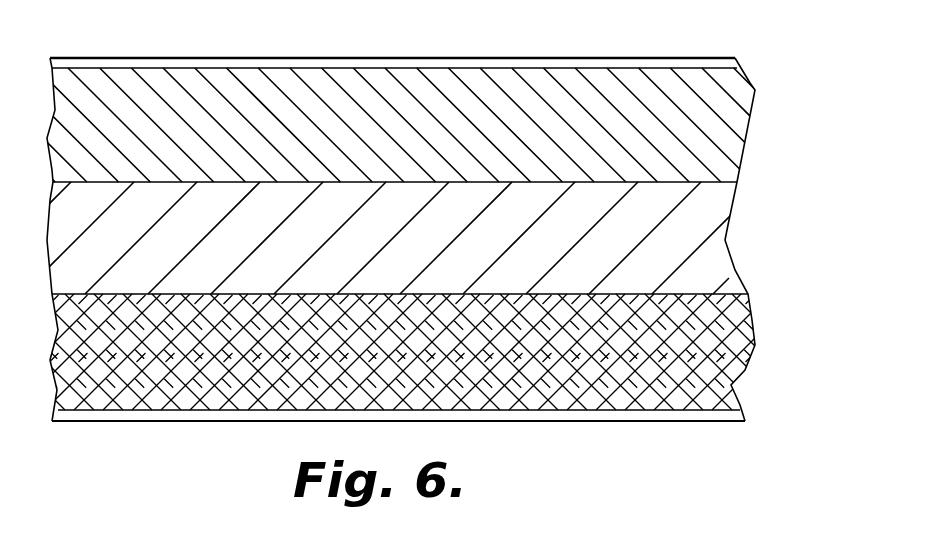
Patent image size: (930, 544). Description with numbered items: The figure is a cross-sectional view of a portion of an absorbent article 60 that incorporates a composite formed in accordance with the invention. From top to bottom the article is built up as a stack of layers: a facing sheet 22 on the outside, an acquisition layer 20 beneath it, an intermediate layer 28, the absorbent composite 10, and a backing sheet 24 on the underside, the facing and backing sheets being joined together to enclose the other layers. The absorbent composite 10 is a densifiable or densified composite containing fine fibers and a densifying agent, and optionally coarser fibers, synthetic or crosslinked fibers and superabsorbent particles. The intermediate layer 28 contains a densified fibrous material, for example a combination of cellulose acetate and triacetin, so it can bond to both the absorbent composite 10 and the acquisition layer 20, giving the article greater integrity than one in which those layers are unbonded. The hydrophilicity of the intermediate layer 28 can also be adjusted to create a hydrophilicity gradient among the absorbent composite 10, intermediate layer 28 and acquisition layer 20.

The laminated structure 60 is at (523, 54).
The facing sheet 22 is at (740, 63).
The acquisition layer 20 is at (738, 128).
The intermediate layer 28 is at (710, 225).
The absorbent composite 10 is at (740, 316).
The backing sheet 24 is at (742, 412).